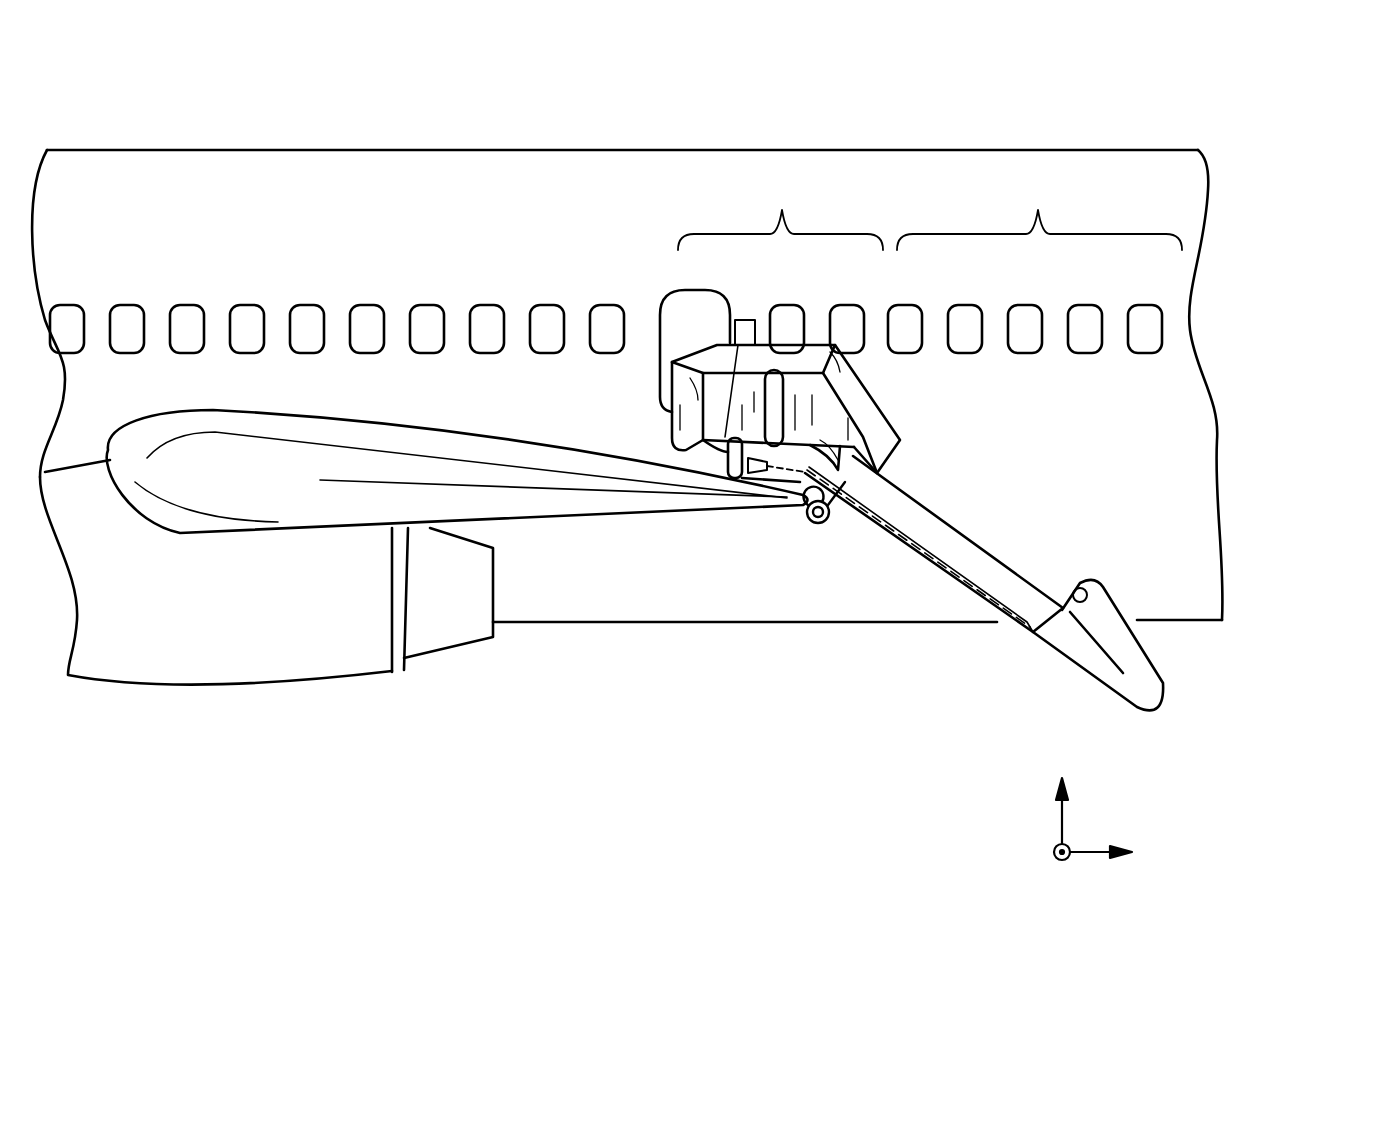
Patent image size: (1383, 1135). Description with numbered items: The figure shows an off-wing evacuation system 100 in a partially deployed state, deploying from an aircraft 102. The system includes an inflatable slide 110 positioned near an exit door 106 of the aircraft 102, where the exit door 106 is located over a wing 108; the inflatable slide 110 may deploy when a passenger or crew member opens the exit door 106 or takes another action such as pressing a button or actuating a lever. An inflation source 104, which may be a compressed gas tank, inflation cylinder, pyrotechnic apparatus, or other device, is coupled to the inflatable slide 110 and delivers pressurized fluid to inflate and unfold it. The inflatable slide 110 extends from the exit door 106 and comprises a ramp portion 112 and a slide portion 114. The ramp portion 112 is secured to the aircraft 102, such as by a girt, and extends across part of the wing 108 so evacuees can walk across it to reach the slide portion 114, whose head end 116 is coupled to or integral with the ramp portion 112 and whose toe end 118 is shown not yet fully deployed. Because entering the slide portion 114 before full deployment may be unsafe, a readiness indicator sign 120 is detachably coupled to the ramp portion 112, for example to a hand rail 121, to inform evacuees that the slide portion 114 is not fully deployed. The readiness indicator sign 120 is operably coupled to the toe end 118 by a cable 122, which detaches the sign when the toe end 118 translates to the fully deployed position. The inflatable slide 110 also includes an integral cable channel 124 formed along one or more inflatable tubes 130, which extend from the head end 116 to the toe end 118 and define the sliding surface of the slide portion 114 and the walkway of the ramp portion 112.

The off-wing evacuation system 100 is at (1250, 93).
The aircraft 102 is at (248, 172).
The inflation source 104 is at (817, 520).
The exit door 106 is at (663, 312).
The wing 108 is at (300, 410).
The inflatable slide 110 is at (1002, 404).
The ramp portion 112 is at (780, 215).
The slide portion 114 is at (1039, 215).
The head end 116 is at (880, 473).
The toe end 118 is at (1083, 585).
The readiness indicator sign 120 is at (750, 322).
The hand rail 121 is at (843, 386).
The cable 122 is at (725, 437).
The integral cable channel 124 is at (955, 580).
The inflatable tubes 130 is at (993, 570).